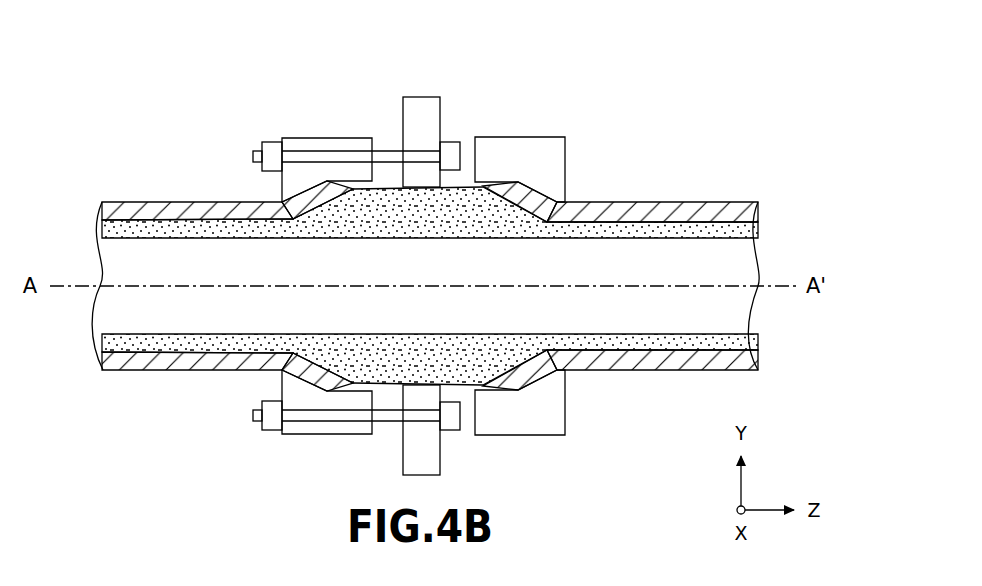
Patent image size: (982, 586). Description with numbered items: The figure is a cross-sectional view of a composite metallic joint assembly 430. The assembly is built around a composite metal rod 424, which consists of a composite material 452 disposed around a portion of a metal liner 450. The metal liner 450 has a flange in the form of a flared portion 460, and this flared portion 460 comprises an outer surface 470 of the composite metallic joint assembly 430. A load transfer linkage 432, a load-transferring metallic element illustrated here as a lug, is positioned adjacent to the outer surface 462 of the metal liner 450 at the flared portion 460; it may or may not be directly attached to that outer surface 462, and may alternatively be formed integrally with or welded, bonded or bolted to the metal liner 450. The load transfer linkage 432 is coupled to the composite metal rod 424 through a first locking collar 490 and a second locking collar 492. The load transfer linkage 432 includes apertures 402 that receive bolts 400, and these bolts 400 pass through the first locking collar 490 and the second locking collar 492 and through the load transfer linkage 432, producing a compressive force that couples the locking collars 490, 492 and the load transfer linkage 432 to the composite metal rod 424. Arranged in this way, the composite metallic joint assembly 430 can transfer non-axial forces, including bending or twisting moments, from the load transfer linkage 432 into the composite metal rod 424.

The bolt 400 is at (388, 151).
The aperture 402 is at (418, 162).
The composite metal rod 424 is at (121, 174).
The composite metallic joint assembly 430 is at (223, 104).
The load transfer linkage 432 is at (427, 118).
The metal liner 450 is at (742, 340).
The composite material 452 is at (748, 358).
The flared portion 460 is at (280, 58).
The outer surface 462 is at (387, 387).
The outer surface 470 is at (548, 190).
The first locking collar 490 is at (322, 138).
The second locking collar 492 is at (525, 147).